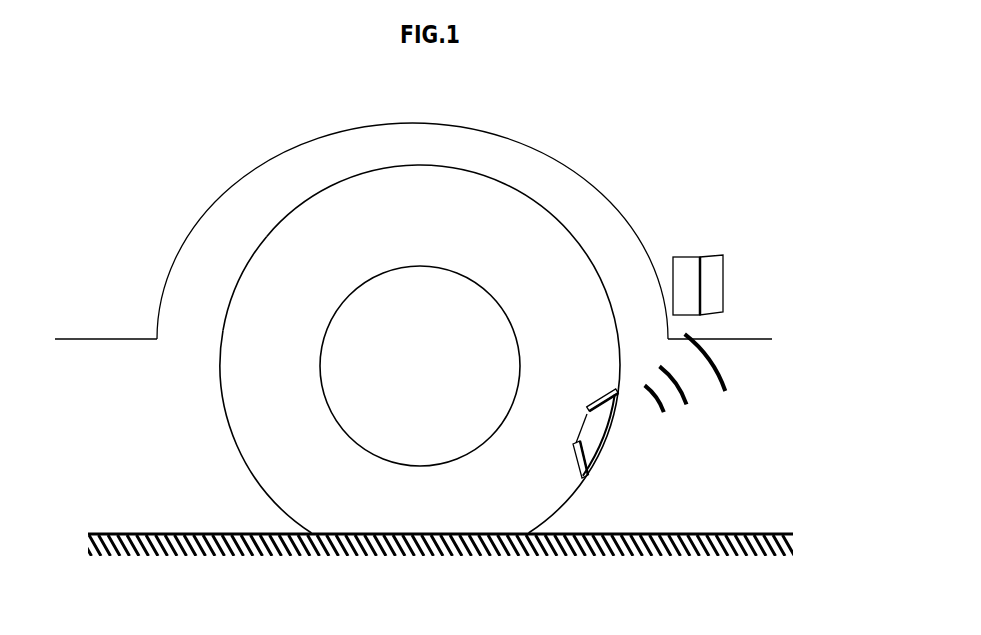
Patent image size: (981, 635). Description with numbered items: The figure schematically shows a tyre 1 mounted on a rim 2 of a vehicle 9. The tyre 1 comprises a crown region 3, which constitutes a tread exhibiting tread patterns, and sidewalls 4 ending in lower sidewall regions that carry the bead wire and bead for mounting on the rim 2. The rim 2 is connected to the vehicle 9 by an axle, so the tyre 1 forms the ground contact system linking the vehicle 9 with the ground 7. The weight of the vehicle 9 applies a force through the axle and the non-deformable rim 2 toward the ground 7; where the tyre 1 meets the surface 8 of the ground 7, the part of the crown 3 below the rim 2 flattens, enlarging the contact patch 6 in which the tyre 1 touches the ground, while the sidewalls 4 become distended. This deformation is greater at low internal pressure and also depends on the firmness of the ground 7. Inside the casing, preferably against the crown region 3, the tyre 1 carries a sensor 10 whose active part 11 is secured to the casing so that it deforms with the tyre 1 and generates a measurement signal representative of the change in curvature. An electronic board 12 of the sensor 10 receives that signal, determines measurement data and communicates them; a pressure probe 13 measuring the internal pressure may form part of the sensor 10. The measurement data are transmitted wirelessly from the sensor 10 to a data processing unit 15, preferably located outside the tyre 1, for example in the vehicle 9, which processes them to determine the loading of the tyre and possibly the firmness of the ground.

The tyre 1 is at (376, 335).
The rim 2 is at (487, 293).
The crown region 3 is at (285, 218).
The sidewalls 4 is at (272, 285).
The contact patch 6 is at (440, 533).
The ground 7 is at (738, 556).
The surface 8 is at (700, 533).
The vehicle 9 is at (642, 116).
The sensor 10 is at (624, 432).
The active part 11 is at (598, 440).
The electronic board 12 is at (598, 393).
The pressure probe 13 is at (575, 478).
The data processing unit 15 is at (688, 256).